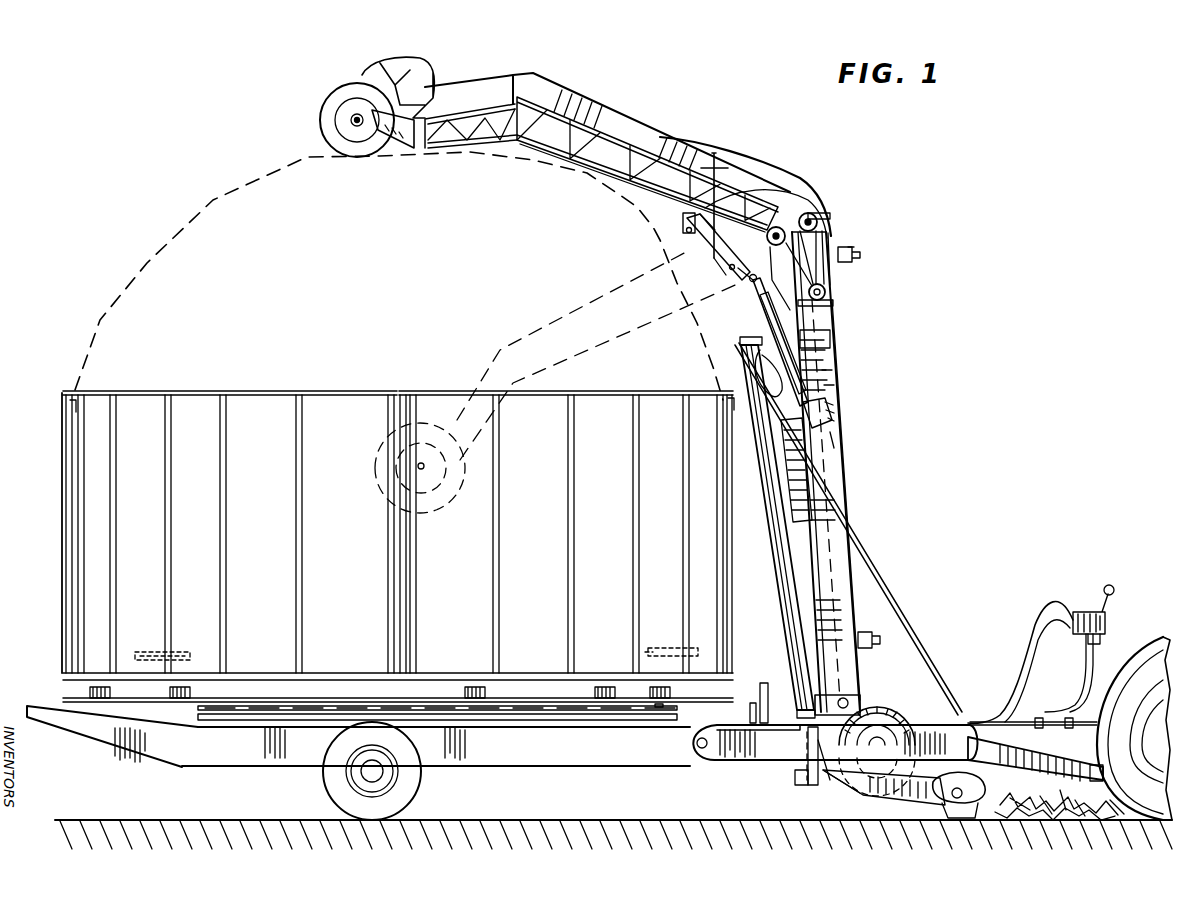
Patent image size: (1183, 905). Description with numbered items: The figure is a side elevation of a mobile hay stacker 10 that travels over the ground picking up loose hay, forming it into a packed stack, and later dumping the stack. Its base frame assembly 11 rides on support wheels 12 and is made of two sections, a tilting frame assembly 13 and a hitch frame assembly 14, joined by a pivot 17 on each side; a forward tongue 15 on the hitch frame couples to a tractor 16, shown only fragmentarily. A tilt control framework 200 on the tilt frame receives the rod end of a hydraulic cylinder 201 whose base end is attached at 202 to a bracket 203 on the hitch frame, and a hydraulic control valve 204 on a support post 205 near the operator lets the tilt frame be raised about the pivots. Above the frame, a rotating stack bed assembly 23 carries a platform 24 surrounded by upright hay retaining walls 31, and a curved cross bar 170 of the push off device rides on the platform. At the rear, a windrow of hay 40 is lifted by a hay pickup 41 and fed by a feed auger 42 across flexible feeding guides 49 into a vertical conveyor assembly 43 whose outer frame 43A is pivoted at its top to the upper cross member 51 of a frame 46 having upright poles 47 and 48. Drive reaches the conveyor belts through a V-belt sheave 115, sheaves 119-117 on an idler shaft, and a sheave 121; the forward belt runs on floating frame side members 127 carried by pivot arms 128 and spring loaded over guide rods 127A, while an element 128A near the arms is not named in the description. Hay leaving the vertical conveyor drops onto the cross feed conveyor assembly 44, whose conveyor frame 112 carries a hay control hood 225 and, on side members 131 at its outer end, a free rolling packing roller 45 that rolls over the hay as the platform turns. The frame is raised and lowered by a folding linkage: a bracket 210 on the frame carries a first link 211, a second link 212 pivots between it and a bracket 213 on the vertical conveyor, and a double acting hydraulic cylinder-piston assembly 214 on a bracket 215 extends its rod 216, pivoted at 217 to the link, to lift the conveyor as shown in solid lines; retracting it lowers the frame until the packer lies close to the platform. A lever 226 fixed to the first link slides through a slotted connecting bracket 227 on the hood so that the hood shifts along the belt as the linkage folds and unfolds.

The mobile hay stacker 10 is at (42, 398).
The base frame assembly 11 is at (504, 774).
The support wheels 12 is at (330, 800).
The tilting frame assembly 13 is at (215, 750).
The hitch frame assembly 14 is at (730, 748).
The tongue 15 is at (1060, 785).
The tractor 16 is at (1148, 650).
The pivot 17 is at (698, 755).
The stack bed assembly 23 is at (147, 721).
The platform member 24 is at (75, 706).
The upright hay retaining walls 31 is at (452, 376).
The windrow of hay 40 is at (1080, 812).
The hay pickup 41 is at (955, 810).
The feed auger 42 is at (915, 725).
The vertical conveyor assembly 43 is at (835, 324).
The outer frame 43A is at (850, 472).
The cross feed conveyor assembly 44 is at (798, 188).
The packing roller 45 is at (434, 59).
The frame 46 is at (893, 593).
The upright pole 47 is at (820, 507).
The upright pole 48 is at (785, 572).
The feeding guides 49 is at (884, 793).
The upper cross member 51 is at (748, 350).
The conveyor frame 112 is at (545, 175).
The V-belt sheave 115 is at (790, 240).
The sheaves 119-117 is at (830, 292).
The sheave 121 is at (820, 222).
The floating frame side members 127 is at (832, 440).
The guide rods 127A is at (868, 647).
The pivot arms 128 is at (852, 262).
The bracket pin 128A is at (862, 255).
The side members 131 is at (412, 165).
The curved cross bar 170 is at (148, 655).
The tilt control framework 200 is at (765, 692).
The hydraulic cylinder 201 is at (795, 770).
The attachment point 202 is at (805, 790).
The bracket 203 is at (828, 780).
The hydraulic control valve 204 is at (1094, 612).
The support post 205 is at (1050, 655).
The bracket 210 is at (688, 223).
The first link 211 is at (730, 262).
The second link 212 is at (720, 318).
The bracket 213 is at (825, 308).
The double acting hydraulic cylinder-piston assembly 214 is at (838, 377).
The bracket 215 is at (835, 412).
The rod 216 is at (838, 348).
The pivot 217 is at (735, 330).
The hay control hood 225 is at (623, 109).
The lever 226 is at (760, 190).
The slotted connecting bracket 227 is at (718, 168).